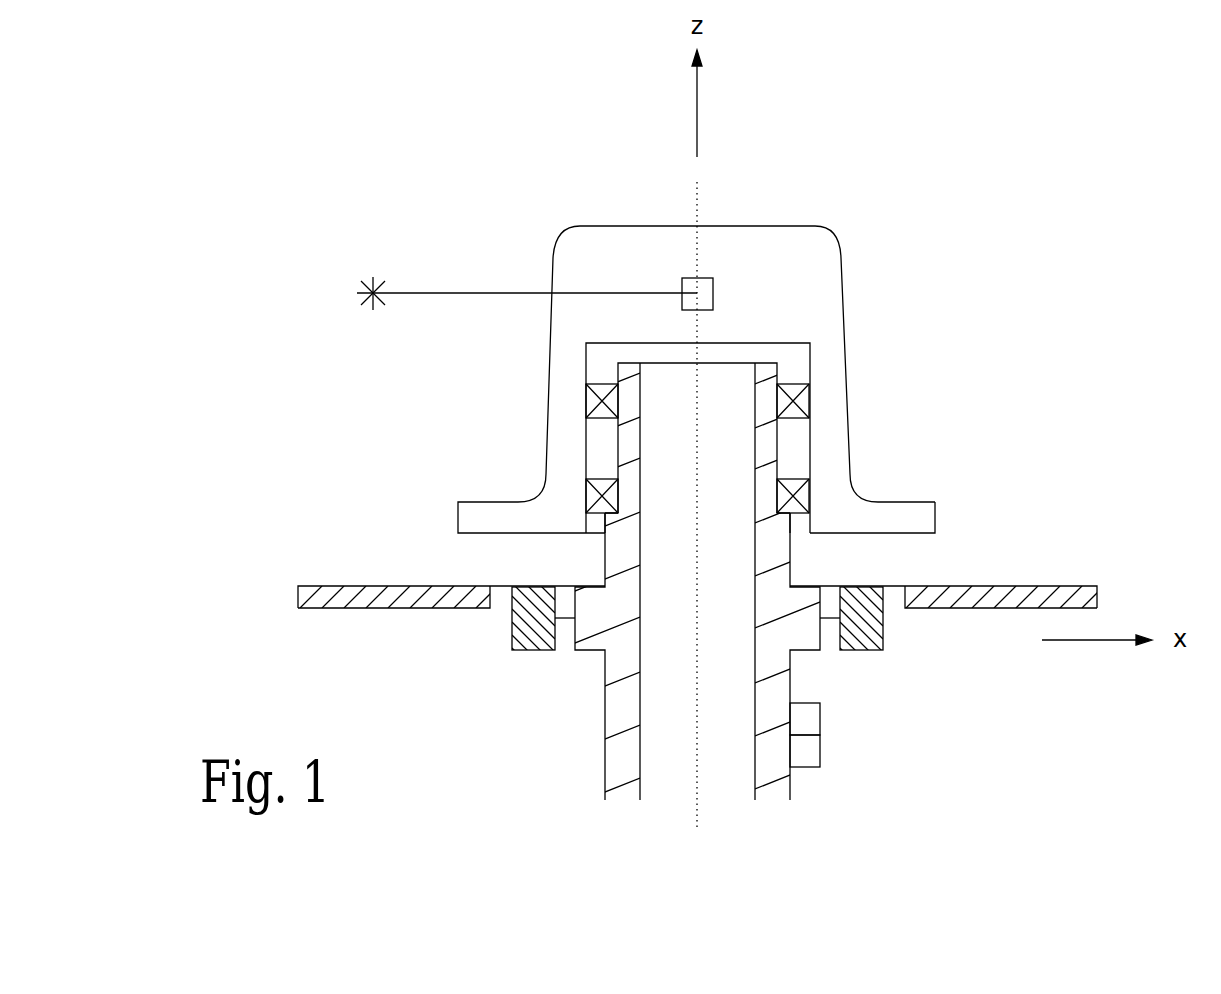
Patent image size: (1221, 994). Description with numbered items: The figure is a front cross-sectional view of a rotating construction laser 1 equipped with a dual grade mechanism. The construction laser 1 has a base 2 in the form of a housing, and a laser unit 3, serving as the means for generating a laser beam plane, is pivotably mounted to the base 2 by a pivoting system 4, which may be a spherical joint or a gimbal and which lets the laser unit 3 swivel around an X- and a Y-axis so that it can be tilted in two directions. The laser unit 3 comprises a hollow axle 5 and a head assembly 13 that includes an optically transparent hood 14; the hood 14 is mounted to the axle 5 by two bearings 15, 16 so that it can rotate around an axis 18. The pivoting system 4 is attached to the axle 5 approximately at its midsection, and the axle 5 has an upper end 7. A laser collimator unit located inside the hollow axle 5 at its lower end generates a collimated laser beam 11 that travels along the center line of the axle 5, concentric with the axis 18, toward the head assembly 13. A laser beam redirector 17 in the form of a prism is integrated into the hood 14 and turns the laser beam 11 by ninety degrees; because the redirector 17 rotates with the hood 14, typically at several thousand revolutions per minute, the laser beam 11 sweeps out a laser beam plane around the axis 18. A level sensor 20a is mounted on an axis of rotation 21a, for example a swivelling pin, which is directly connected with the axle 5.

The rotating construction laser 1 is at (912, 163).
The base 2 is at (957, 608).
The laser unit 3 is at (862, 444).
The pivoting system 4 is at (565, 618).
The hollow axle 5 is at (607, 730).
The upper end 7 is at (765, 363).
The laser beam 11 is at (493, 293).
The head assembly 13 is at (632, 253).
The optically transparent hood 14 is at (843, 263).
The bearing 15 is at (810, 494).
The bearing 16 is at (810, 395).
The laser beam redirector 17 is at (705, 277).
The axis 18 is at (697, 200).
The level sensor 20a is at (822, 715).
The axis of rotation 21a is at (822, 752).